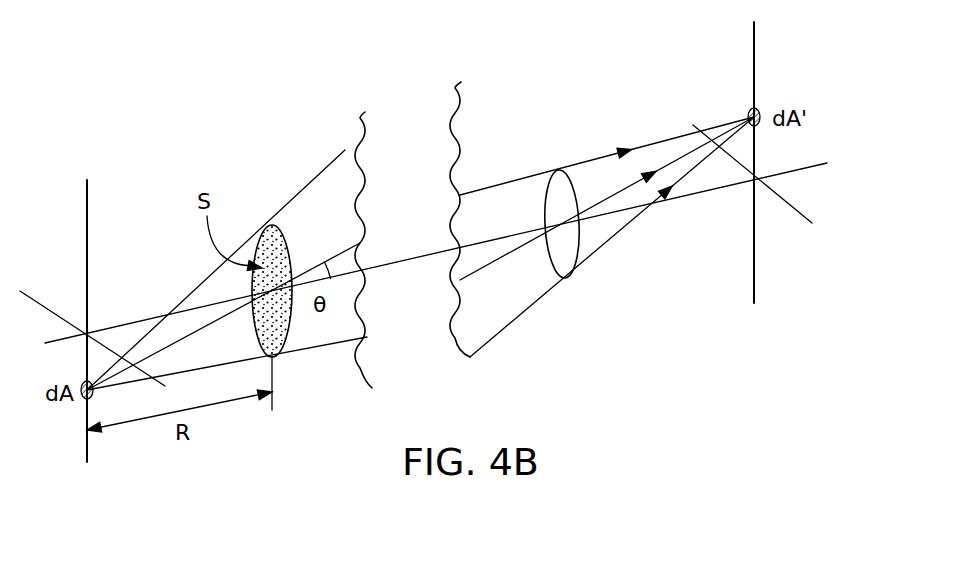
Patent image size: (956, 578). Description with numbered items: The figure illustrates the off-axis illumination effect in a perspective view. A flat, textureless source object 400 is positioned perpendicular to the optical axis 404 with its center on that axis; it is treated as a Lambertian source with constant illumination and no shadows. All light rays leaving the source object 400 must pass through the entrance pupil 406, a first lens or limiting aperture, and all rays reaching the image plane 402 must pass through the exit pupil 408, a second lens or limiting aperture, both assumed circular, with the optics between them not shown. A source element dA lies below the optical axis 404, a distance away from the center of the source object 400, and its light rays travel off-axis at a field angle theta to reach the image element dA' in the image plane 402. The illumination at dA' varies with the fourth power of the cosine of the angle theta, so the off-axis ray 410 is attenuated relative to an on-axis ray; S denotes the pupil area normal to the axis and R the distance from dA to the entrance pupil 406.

The source object 400 is at (85, 200).
The image plane 402 is at (757, 42).
The optical axis 404 is at (690, 197).
The entrance pupil 406 is at (288, 228).
The exit pupil 408 is at (548, 192).
The ray at angle theta 410 is at (312, 262).